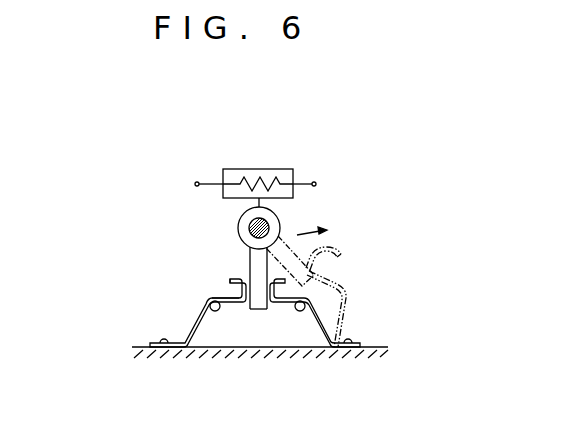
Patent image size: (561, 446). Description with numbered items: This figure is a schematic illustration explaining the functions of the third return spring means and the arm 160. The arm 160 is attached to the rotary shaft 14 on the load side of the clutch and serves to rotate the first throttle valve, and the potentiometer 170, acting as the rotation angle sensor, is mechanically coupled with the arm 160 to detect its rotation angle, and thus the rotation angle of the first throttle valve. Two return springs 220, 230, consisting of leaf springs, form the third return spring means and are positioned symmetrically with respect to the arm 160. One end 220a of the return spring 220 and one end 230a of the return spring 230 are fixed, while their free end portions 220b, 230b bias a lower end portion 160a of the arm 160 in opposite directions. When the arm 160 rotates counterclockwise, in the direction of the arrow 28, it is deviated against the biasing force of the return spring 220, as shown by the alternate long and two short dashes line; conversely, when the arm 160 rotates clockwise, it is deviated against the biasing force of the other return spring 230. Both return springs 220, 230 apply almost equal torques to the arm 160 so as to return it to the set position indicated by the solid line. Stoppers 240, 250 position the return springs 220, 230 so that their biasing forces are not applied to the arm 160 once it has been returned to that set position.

The rotary shaft 14 is at (281, 213).
The arrow 28 is at (336, 219).
The arm 160 is at (247, 247).
The lower end portion 160a is at (256, 311).
The potentiometer 170 is at (270, 169).
The return spring 220 is at (350, 296).
The one end 220a is at (349, 350).
The free end portion 220b is at (277, 280).
The return spring 230 is at (197, 316).
The one end 230a is at (152, 339).
The free end portion 230b is at (246, 280).
The stopper 240 is at (297, 313).
The stopper 250 is at (220, 298).